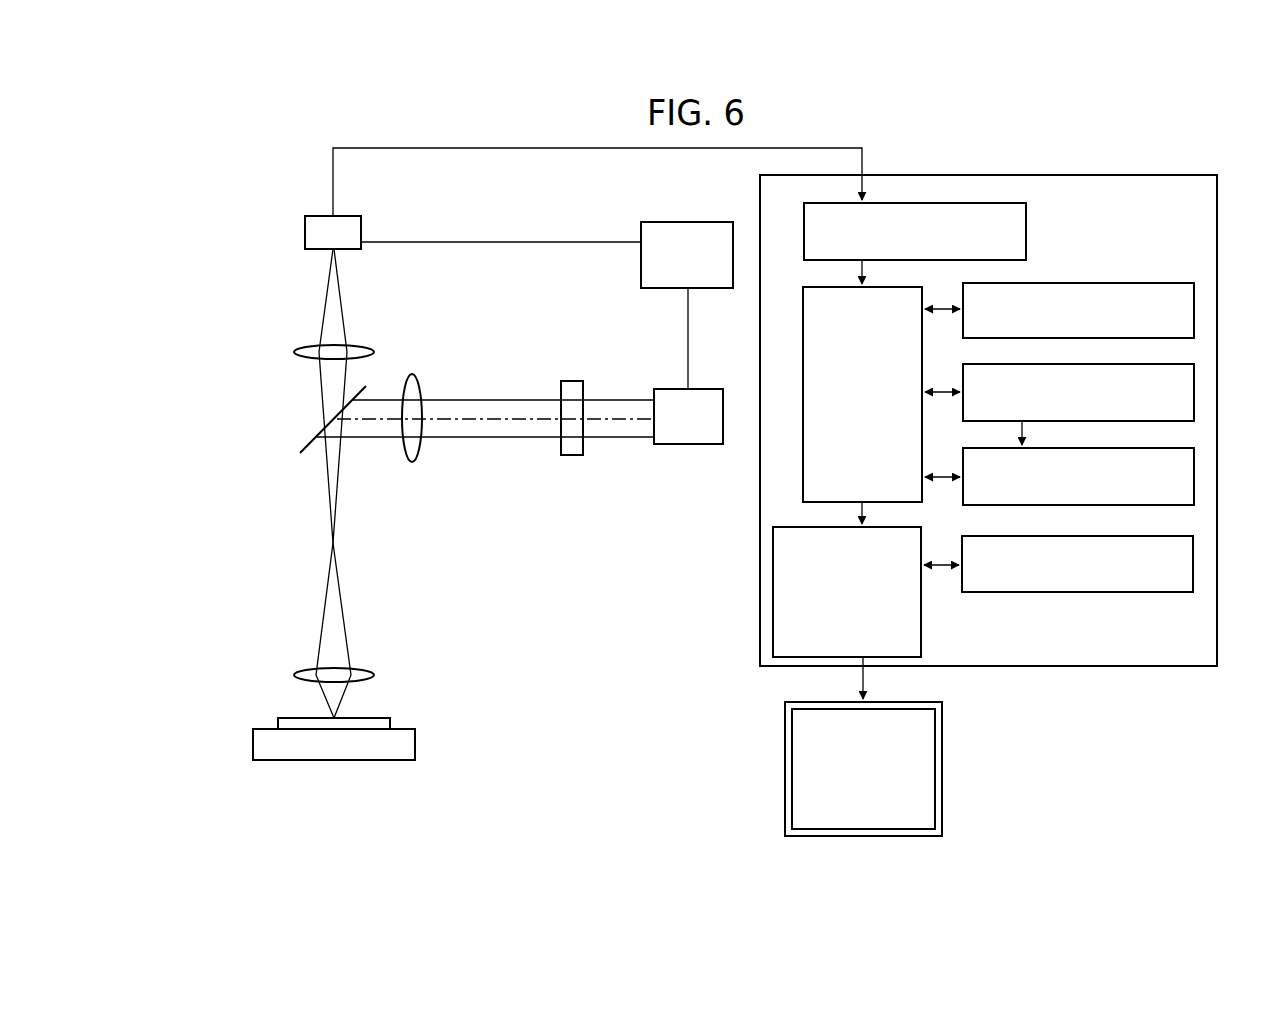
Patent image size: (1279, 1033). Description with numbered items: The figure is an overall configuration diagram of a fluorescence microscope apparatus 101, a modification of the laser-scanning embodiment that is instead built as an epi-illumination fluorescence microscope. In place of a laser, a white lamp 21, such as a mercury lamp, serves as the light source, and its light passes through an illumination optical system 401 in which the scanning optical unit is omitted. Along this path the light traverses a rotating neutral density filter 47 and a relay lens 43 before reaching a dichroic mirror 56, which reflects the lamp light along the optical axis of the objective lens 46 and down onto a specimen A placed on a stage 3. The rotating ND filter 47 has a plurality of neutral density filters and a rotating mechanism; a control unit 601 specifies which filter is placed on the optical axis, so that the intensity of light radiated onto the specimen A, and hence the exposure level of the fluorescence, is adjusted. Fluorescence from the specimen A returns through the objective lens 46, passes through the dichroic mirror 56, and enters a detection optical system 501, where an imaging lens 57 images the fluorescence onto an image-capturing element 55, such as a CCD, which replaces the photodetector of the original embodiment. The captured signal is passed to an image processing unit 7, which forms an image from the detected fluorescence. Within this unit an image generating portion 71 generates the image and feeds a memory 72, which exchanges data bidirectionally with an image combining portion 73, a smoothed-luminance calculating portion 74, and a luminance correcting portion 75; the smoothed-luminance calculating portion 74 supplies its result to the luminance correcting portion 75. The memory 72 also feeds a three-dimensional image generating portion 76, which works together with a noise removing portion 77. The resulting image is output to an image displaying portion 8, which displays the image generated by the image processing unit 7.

The fluorescence microscope apparatus 101 is at (198, 150).
The detection optical system 501 is at (302, 192).
The image-capturing element 55 is at (305, 233).
The imaging lens 57 is at (294, 352).
The dichroic mirror 56 is at (312, 441).
The illumination optical system 401 is at (476, 525).
The relay lens 43 is at (412, 462).
The rotating neutral density filter 47 is at (571, 455).
The white lamp 21 is at (688, 444).
The control unit 601 is at (661, 288).
The objective lens 46 is at (294, 675).
The specimen A is at (382, 718).
The stage 3 is at (415, 745).
The image processing unit 7 is at (963, 175).
The image generating portion 71 is at (1026, 231).
The memory 72 is at (803, 473).
The image combining portion 73 is at (1194, 316).
The smoothed-luminance calculating portion 74 is at (1194, 390).
The luminance correcting portion 75 is at (1194, 465).
The three-dimensional image generating portion 76 is at (773, 565).
The noise removing portion 77 is at (1193, 562).
The image displaying portion 8 is at (785, 768).